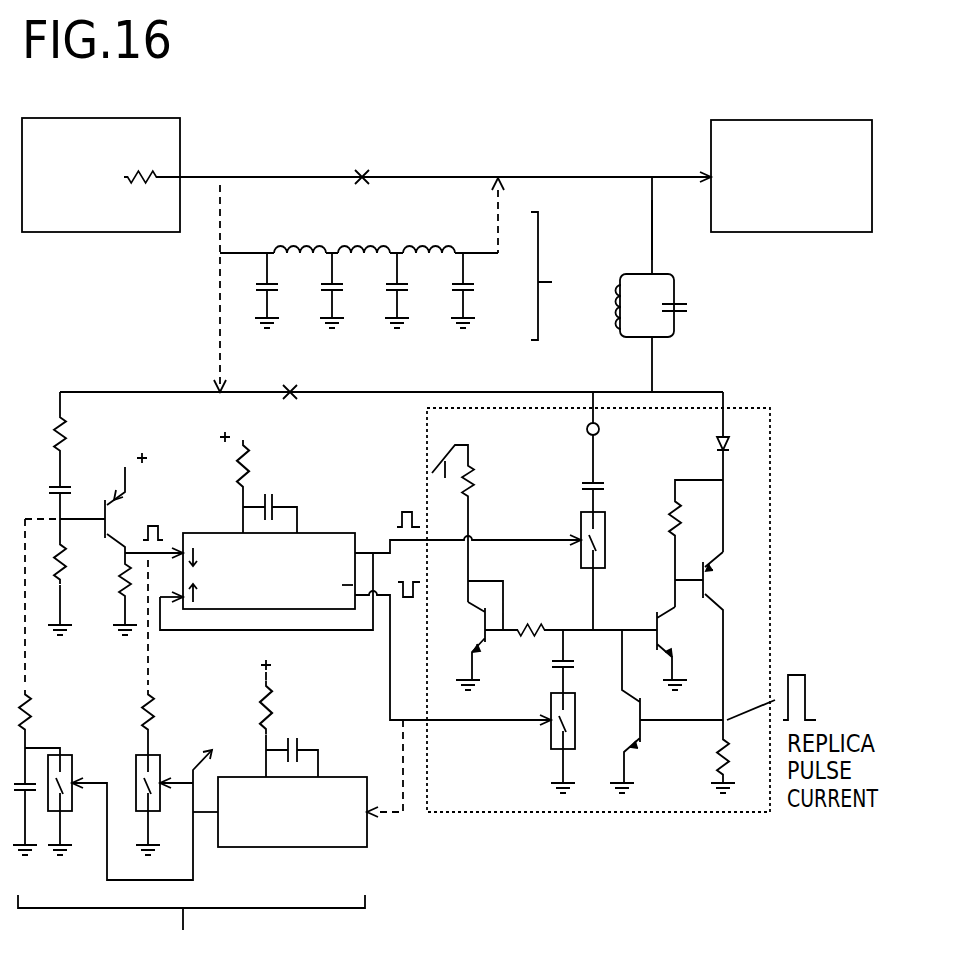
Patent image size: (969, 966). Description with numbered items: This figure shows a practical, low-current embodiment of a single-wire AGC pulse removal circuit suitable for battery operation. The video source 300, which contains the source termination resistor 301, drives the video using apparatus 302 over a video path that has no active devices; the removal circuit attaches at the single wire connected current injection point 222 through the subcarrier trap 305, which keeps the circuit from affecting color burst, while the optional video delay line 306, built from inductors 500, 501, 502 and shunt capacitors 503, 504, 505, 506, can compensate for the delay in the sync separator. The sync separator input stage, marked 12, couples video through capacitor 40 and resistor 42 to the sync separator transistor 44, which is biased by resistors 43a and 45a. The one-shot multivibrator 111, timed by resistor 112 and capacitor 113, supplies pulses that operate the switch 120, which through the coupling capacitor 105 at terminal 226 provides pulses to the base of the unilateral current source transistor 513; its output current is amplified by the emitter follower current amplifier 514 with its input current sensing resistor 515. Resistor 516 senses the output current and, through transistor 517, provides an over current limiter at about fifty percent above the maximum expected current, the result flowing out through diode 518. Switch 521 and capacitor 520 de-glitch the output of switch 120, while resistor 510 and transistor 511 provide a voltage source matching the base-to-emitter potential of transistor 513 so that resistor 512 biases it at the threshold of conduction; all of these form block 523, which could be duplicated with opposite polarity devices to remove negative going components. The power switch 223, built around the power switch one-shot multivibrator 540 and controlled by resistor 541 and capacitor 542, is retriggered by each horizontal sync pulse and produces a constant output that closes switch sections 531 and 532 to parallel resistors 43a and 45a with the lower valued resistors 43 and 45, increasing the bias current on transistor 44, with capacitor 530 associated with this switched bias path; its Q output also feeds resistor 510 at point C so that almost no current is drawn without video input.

The video source 300 is at (183, 147).
The source resistor 301 is at (142, 159).
The video using apparatus 302 is at (705, 143).
The single wire current injection point 222 is at (645, 228).
The subcarrier trap 305 is at (690, 345).
The video delay line 306 is at (560, 276).
The filter inductor 500 is at (300, 231).
The filter inductor 501 is at (364, 231).
The filter inductor 502 is at (429, 231).
The filter capacitor 503 is at (283, 290).
The filter capacitor 504 is at (348, 290).
The filter capacitor 505 is at (413, 290).
The filter capacitor 506 is at (479, 290).
The supply node 12 is at (120, 452).
The resistor 42 is at (46, 450).
The coupling capacitor 40 is at (46, 508).
The bias resistor 43a is at (78, 587).
The bias resistor 45a is at (111, 597).
The sync separator transistor 44 is at (144, 506).
The one-shot multivibrator 111 is at (225, 527).
The timing resistor 112 is at (255, 482).
The timing capacitor 113 is at (281, 499).
The terminal 226 is at (586, 434).
The coupling capacitor 105 is at (572, 492).
The switch 120 is at (572, 571).
The resistor 510 is at (471, 523).
The transistor 511 is at (466, 635).
The resistor 512 is at (580, 612).
The unilateral current source transistor 513 is at (678, 648).
The emitter follower current amplifier 514 is at (712, 643).
The input current sensing resistor 515 is at (675, 543).
The output current sensing resistor 516 is at (703, 764).
The over current limiter transistor 517 is at (660, 711).
The diode 518 is at (700, 472).
The de-glitch capacitor 520 is at (583, 661).
The de-glitch switch 521 is at (541, 743).
The current source block 523 is at (593, 818).
The lower valued resistor 43 is at (38, 737).
The lower valued resistor 45 is at (162, 722).
The switch section 531 is at (78, 763).
The switch section 532 is at (165, 763).
The capacitor 530 is at (32, 797).
The power switch one-shot multivibrator 540 is at (278, 855).
The resistor 541 is at (286, 705).
The capacitor 542 is at (303, 746).
The power switch 223 is at (191, 929).